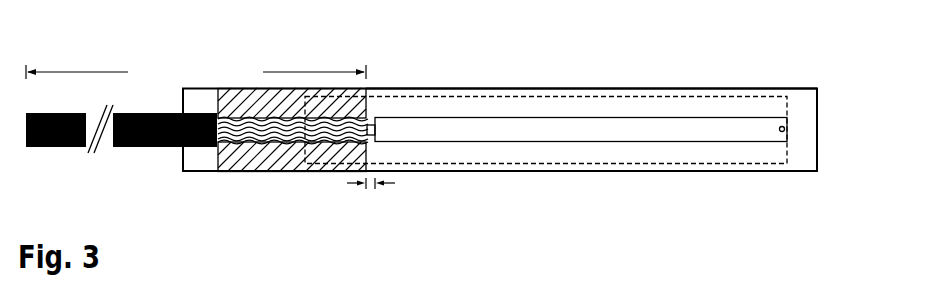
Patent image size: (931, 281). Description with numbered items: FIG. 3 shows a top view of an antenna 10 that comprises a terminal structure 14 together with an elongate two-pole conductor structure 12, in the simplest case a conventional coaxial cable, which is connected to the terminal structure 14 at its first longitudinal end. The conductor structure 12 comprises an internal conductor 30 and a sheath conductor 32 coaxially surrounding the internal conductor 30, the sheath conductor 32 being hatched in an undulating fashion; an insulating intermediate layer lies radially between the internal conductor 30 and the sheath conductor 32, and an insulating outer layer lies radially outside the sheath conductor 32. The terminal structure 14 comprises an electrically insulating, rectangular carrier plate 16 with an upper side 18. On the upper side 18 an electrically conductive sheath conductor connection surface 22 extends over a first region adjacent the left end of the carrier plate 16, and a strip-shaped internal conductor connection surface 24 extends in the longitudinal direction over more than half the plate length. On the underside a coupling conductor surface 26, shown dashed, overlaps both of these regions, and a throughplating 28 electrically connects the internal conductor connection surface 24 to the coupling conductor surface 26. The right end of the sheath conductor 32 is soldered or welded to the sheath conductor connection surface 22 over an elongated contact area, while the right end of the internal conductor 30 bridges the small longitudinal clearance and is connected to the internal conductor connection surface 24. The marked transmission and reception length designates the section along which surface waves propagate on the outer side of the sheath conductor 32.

The antenna 10 is at (182, 0).
The two-pole conductor structure 12 is at (106, 170).
The terminal structure 14 is at (371, 27).
The carrier plate 16 is at (195, 100).
The upper side 18 is at (510, 103).
The sheath conductor connection surface 22 is at (258, 92).
The internal conductor connection surface 24 is at (562, 123).
The coupling conductor surface 26 is at (560, 164).
The throughplating 28 is at (780, 127).
The internal conductor 30 is at (404, 116).
The sheath conductor 32 is at (238, 123).